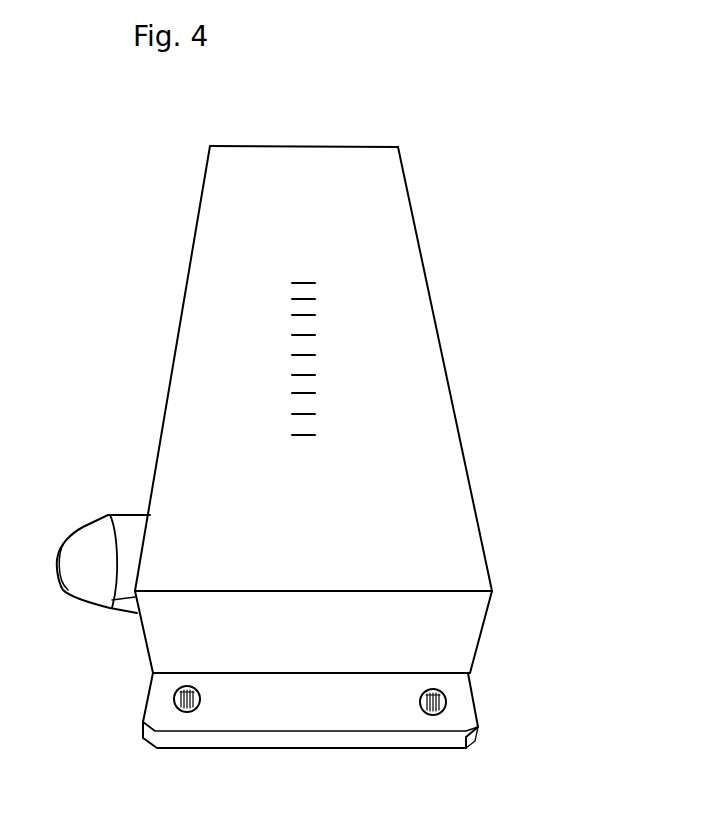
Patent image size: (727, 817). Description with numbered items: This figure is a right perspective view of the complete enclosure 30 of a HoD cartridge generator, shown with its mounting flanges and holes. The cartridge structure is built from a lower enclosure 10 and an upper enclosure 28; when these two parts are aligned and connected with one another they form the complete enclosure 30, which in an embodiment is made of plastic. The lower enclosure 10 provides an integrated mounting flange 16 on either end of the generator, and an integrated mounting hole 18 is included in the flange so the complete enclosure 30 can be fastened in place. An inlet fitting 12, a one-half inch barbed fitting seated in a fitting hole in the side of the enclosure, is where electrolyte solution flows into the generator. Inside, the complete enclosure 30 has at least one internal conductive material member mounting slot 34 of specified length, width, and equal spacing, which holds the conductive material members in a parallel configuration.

The lower enclosure 10 is at (483, 628).
The inlet fitting 12 is at (80, 520).
The integrated mounting flange 16 is at (150, 708).
The integrated mounting hole 18 is at (448, 703).
The upper enclosure 28 is at (463, 525).
The complete enclosure 30 is at (183, 292).
The internal conductive material member mounting slot 34 is at (310, 413).